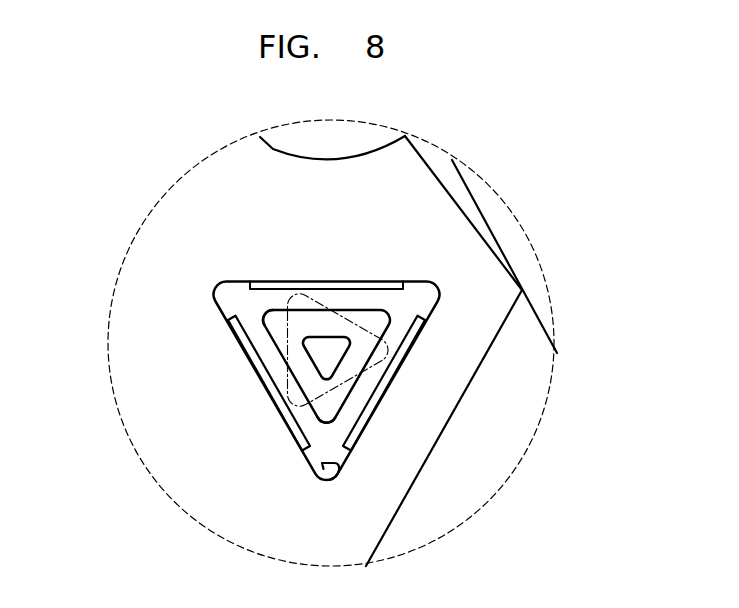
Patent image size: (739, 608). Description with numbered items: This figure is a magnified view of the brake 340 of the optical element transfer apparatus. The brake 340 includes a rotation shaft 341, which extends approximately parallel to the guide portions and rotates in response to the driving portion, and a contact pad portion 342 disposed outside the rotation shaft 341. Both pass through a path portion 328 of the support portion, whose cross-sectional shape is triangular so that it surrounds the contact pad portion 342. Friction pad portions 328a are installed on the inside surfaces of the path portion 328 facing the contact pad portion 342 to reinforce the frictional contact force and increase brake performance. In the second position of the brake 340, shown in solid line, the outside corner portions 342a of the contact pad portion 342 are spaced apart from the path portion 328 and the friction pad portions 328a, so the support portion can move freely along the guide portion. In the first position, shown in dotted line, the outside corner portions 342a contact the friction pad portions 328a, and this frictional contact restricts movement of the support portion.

The path portion 328 is at (329, 481).
The friction pad portions 328a is at (373, 408).
The brake 340 is at (593, 197).
The rotation shaft 341 is at (333, 348).
The contact pad portion 342 is at (357, 367).
The outside corner portions 342a is at (267, 316).